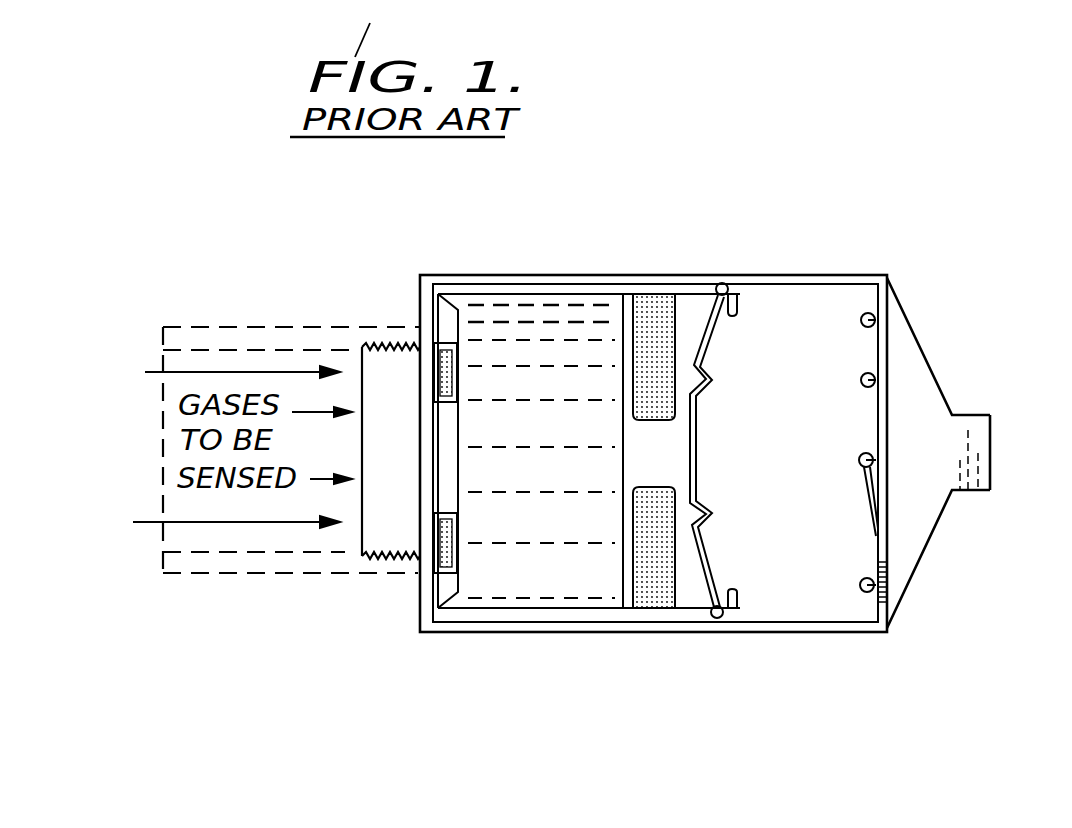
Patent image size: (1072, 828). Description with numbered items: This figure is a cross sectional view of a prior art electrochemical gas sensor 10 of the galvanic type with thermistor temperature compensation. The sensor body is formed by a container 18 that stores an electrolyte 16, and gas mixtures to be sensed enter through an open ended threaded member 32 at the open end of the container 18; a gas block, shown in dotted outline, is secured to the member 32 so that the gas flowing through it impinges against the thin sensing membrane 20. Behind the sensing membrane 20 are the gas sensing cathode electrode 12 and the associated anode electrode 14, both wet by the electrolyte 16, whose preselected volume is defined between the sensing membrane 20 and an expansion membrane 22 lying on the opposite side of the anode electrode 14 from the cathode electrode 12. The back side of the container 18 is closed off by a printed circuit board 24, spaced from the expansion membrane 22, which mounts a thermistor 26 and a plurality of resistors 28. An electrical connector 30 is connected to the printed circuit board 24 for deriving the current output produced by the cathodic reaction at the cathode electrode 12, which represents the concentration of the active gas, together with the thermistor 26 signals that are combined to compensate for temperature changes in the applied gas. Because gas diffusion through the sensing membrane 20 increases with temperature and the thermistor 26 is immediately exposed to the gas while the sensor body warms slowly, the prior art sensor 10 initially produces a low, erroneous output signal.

The electrochemical gas sensor 10 is at (626, 248).
The gas sensing cathode electrode 12 is at (447, 483).
The anode electrode 14 is at (653, 590).
The electrolyte 16 is at (547, 562).
The container 18 is at (481, 275).
The thin sensing membrane 20 is at (432, 412).
The expansion membrane 22 is at (703, 340).
The printed circuit board 24 is at (887, 414).
The thermistor 26 is at (872, 463).
The resistors 28 is at (867, 312).
The electrical connector 30 is at (990, 442).
The open ended threaded member 32 is at (376, 560).